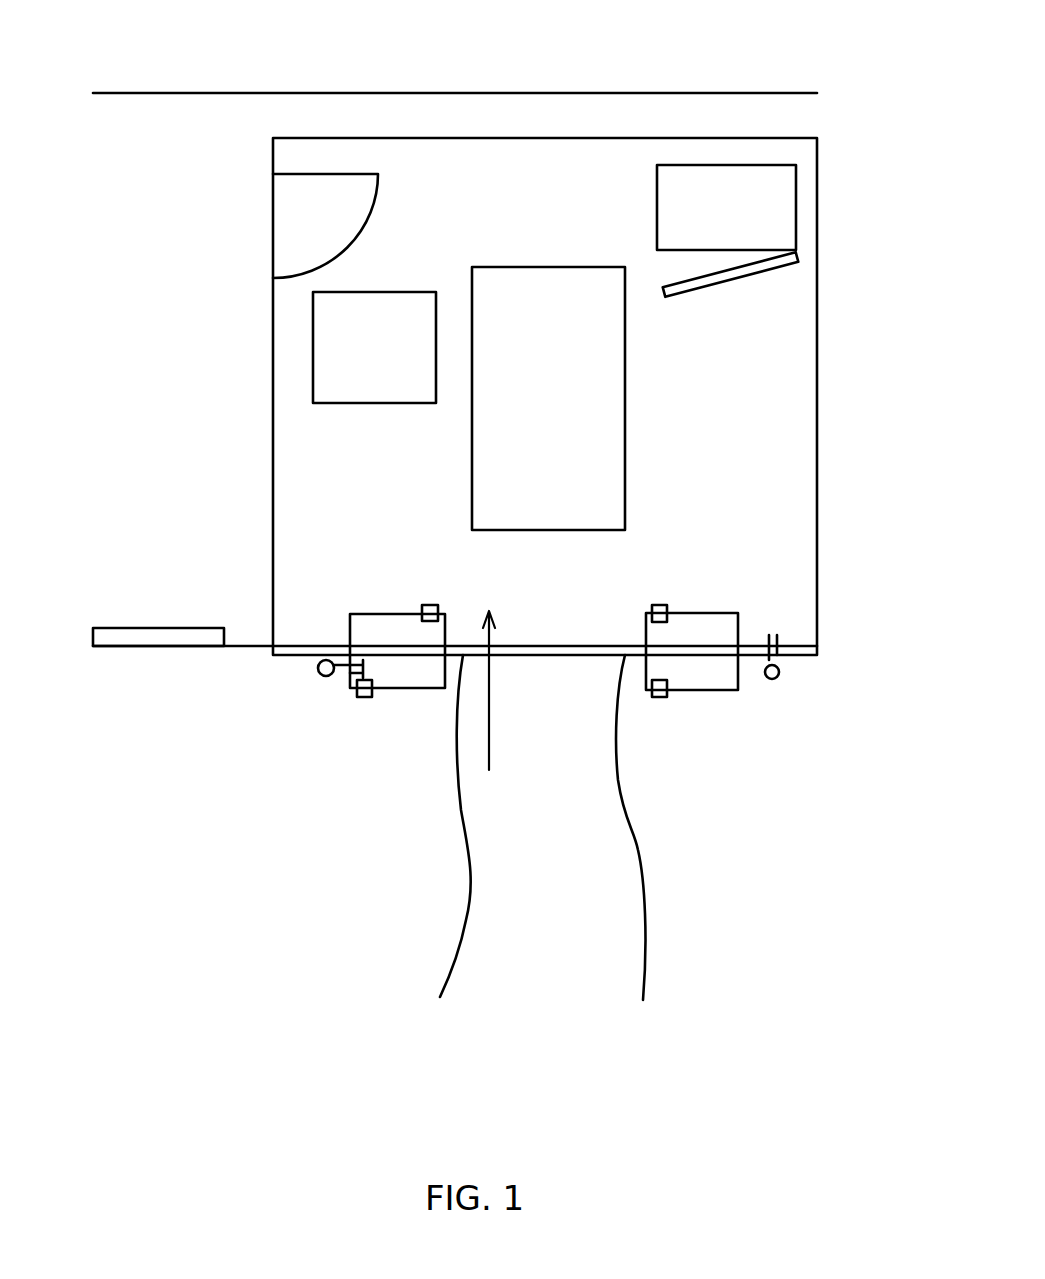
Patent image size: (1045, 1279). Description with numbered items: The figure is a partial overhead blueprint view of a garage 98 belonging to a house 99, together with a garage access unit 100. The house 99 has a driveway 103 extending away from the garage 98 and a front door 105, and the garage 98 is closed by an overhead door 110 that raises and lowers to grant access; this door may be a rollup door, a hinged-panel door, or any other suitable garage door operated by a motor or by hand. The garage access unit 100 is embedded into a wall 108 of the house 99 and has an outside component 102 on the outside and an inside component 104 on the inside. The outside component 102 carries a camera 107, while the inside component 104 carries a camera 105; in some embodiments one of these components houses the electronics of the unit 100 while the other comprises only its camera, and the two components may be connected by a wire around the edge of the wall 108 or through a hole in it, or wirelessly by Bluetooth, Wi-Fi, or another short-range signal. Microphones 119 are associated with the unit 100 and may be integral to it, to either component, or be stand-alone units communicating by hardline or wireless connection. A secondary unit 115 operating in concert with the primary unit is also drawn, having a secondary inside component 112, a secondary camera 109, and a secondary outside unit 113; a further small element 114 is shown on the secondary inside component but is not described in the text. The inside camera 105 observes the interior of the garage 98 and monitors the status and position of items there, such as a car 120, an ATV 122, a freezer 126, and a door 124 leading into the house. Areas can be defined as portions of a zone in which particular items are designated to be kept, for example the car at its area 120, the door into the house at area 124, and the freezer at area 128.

The garage 98 is at (489, 710).
The house 99 is at (818, 674).
The garage access unit 100 is at (297, 694).
The outside component 102 is at (416, 689).
The driveway 103 is at (630, 927).
The inside component 104 is at (367, 622).
The inside camera 105 is at (431, 604).
The camera 107 is at (362, 699).
The wall 108 is at (288, 650).
The secondary camera 109 is at (661, 604).
The overhead door 110 is at (543, 655).
The secondary inside component 112 is at (716, 627).
The secondary outside unit 113 is at (727, 678).
The sensor 114 is at (656, 699).
The secondary unit 115 is at (704, 716).
The microphones 119 is at (321, 662).
The car 120 is at (537, 285).
The ATV 122 is at (323, 356).
The door 124 is at (280, 177).
The freezer 126 is at (716, 195).
The area 128 is at (720, 272).